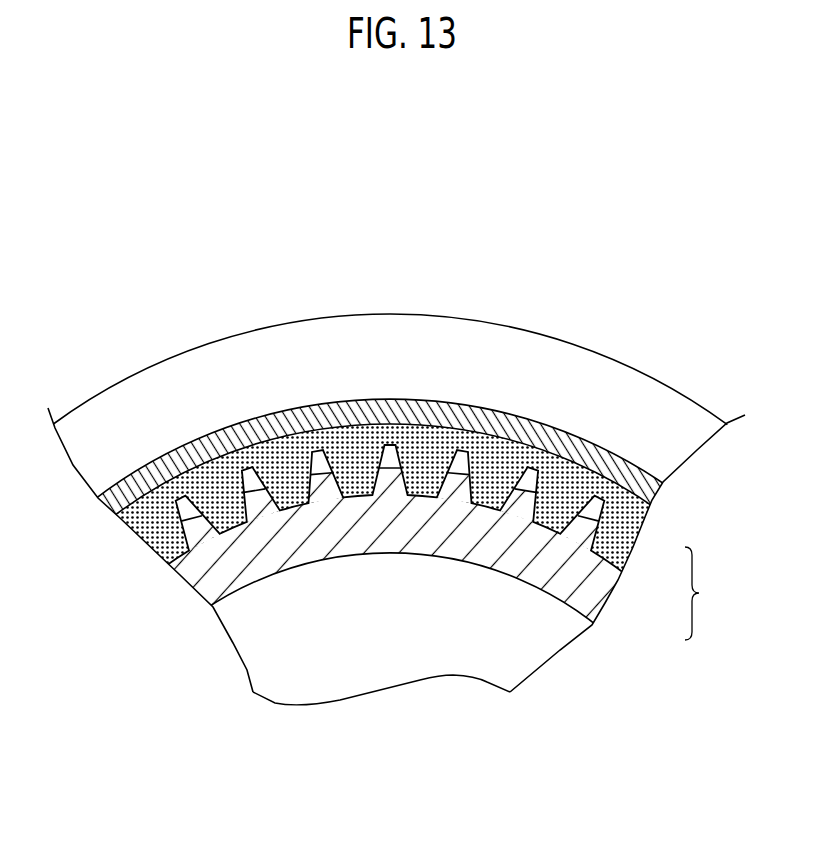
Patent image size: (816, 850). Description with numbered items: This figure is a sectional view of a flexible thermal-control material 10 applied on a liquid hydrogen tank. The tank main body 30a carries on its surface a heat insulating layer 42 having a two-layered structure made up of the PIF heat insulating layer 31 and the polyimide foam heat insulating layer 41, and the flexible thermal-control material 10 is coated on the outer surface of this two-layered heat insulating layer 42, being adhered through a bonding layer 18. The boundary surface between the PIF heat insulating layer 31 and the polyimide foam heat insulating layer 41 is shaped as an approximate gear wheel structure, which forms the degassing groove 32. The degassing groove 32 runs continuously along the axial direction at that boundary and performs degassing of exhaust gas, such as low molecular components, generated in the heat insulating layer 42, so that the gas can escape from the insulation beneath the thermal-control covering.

The flexible thermal-control material 10 is at (420, 313).
The bonding layer 18 is at (662, 484).
The degassing groove 32 is at (540, 473).
The polyimide foam heat insulating layer 41 is at (620, 542).
The heat insulating layer 42 is at (400, 485).
The PIF heat insulating layer 31 is at (400, 485).
The tank main body 30a is at (530, 647).